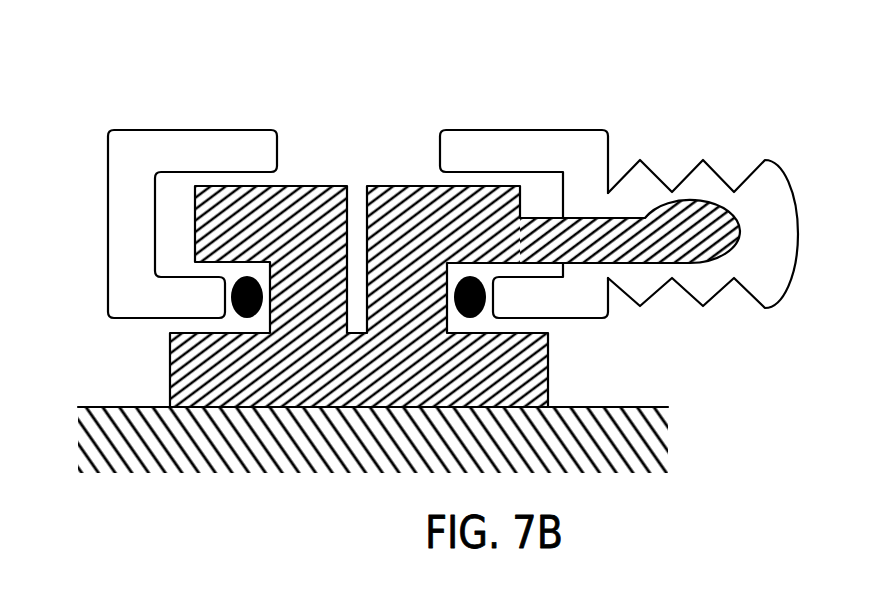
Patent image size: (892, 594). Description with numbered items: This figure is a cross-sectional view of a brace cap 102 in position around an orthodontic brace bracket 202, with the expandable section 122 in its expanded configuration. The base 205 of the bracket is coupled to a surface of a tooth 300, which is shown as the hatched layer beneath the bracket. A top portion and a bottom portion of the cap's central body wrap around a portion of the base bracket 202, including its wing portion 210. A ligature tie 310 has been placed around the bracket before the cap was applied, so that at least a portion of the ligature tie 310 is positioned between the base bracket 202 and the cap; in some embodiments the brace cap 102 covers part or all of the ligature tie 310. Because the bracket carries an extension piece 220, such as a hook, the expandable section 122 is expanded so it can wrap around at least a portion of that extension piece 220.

The brace cap 102 is at (215, 106).
The expandable section 122 is at (748, 180).
The brace bracket 202 is at (168, 382).
The base 205 is at (387, 408).
The wing portion 210 is at (396, 286).
The extension piece 220 is at (643, 193).
The tooth 300 is at (220, 460).
The ligature tie 310 is at (485, 295).